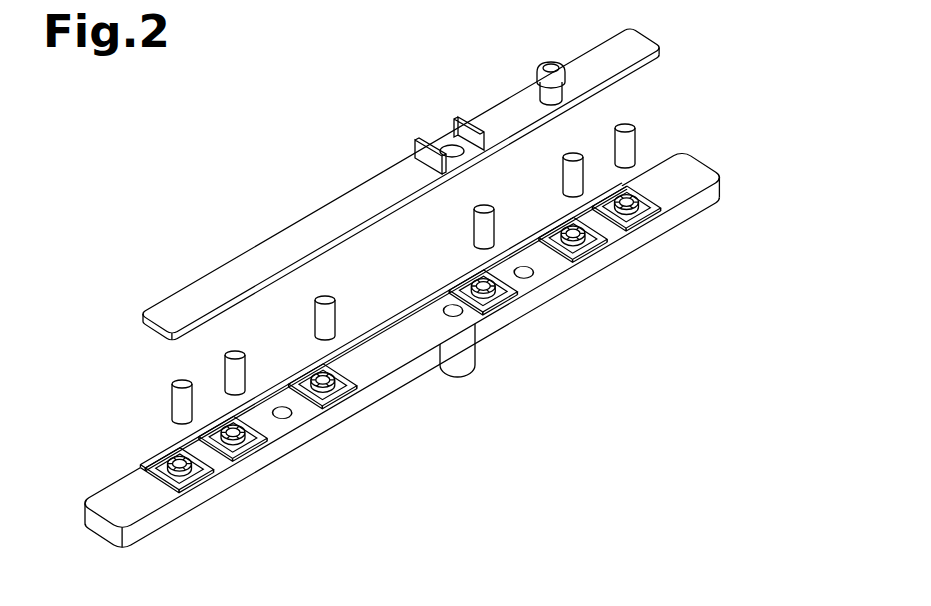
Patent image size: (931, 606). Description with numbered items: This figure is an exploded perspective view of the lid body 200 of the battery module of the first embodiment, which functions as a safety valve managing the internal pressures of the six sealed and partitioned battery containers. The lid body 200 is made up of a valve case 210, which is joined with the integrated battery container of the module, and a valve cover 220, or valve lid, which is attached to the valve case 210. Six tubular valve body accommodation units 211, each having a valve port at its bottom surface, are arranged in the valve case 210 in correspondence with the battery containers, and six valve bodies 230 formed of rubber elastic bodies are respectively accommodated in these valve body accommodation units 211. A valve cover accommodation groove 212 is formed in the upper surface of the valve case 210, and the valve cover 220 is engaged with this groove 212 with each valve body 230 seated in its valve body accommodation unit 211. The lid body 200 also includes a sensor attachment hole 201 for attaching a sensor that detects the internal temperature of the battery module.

The lid body 200 is at (704, 3).
The sensor attachment hole 201 is at (454, 145).
The valve case 210 is at (429, 347).
The valve body accommodation unit 211 is at (412, 369).
The valve cover accommodation groove 212 is at (391, 362).
The valve cover 220 is at (430, 180).
The valve body 230 is at (688, 118).